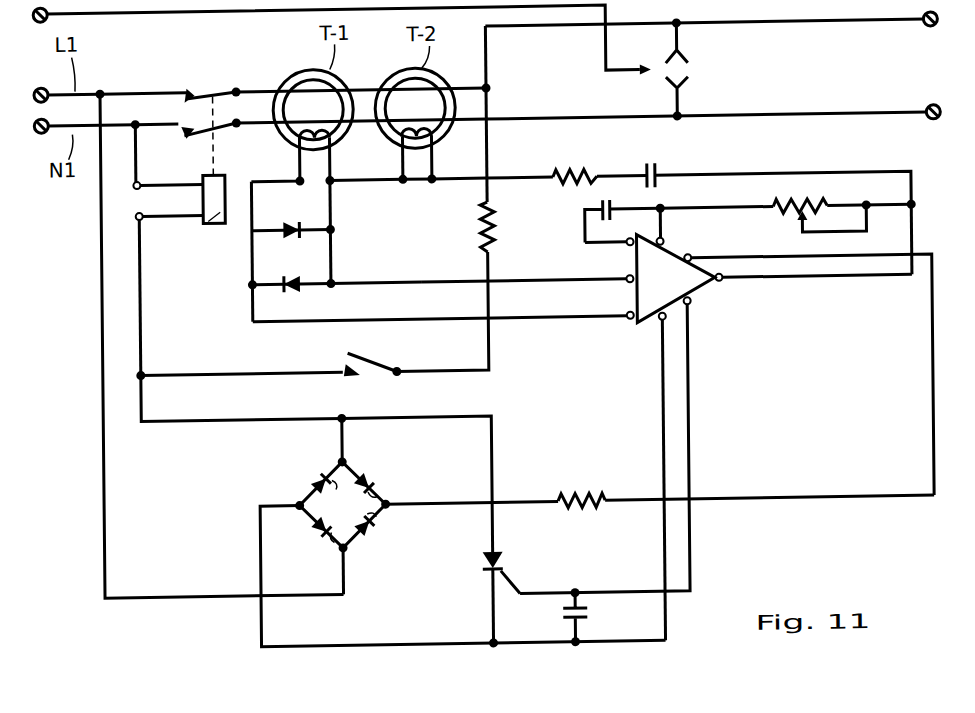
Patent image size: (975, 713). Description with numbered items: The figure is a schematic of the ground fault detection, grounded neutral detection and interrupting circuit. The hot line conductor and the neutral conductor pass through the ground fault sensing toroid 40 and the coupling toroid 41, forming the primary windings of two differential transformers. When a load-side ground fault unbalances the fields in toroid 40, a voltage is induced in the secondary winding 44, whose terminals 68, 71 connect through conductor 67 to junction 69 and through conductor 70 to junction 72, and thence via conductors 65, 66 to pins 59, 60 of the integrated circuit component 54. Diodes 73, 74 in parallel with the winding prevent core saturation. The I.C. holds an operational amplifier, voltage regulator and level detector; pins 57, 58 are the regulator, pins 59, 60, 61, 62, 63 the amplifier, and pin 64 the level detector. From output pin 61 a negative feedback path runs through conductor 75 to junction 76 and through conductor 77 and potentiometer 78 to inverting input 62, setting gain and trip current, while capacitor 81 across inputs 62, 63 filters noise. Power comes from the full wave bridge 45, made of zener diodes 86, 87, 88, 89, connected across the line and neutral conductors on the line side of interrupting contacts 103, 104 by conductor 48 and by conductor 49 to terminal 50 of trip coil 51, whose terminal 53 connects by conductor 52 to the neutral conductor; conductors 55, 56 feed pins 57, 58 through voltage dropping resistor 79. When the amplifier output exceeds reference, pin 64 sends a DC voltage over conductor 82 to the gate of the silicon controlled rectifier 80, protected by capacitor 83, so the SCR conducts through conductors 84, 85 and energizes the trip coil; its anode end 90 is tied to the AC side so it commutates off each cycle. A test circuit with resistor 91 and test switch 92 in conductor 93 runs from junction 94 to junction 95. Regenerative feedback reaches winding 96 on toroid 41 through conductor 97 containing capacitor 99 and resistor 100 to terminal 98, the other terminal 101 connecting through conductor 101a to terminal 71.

The ground fault sensing toroid 40 is at (298, 69).
The coupling toroid 41 is at (403, 67).
The secondary winding 44 is at (283, 125).
The full wave bridge 45 is at (297, 495).
The conductor 48 is at (100, 445).
The conductor 49 is at (265, 414).
The terminal of trip coil 50 is at (142, 215).
The trip coil 51 is at (213, 220).
The conductor 52 is at (137, 152).
The terminal of trip coil 53 is at (141, 183).
The integrated circuit component 54 is at (703, 283).
The conductor 55 is at (522, 501).
The conductor 56 is at (382, 640).
The pin 57 is at (692, 260).
The pin 58 is at (657, 326).
The pin 59 is at (626, 323).
The pin 60 is at (626, 284).
The output pin 61 is at (725, 286).
The inverting input 62 is at (665, 242).
The pin 63 is at (627, 247).
The pin 64 is at (690, 305).
The conductor 65 is at (523, 321).
The conductor 66 is at (515, 278).
The conductor 67 is at (253, 190).
The terminal of secondary winding 68 is at (296, 175).
The junction 69 is at (249, 282).
The conductor 70 is at (336, 215).
The terminal of secondary winding 71 is at (336, 177).
The junction 72 is at (338, 276).
The diode 73 is at (287, 232).
The diode 74 is at (301, 287).
The conductor 75 is at (847, 283).
The junction 76 is at (915, 209).
The conductor 77 is at (765, 206).
The potentiometer 78 is at (868, 223).
The voltage dropping resistor 79 is at (593, 495).
The silicon controlled rectifier 80 is at (503, 568).
The capacitor 81 is at (598, 212).
The conductor 82 is at (690, 446).
The capacitor 83 is at (560, 611).
The conductor 84 is at (490, 432).
The conductor 85 is at (487, 595).
The zener diode 86 is at (315, 527).
The zener diode 87 is at (365, 528).
The zener diode 88 is at (364, 473).
The zener diode 89 is at (315, 464).
The anode end of SCR 90 is at (490, 558).
The resistor 91 is at (497, 213).
The test switch 92 is at (347, 355).
The conductor 93 is at (492, 369).
The junction 94 is at (490, 87).
The junction 95 is at (142, 369).
The winding 96 is at (437, 122).
The conductor 97 is at (775, 177).
The terminal of winding 98 is at (435, 188).
The capacitor 99 is at (660, 173).
The resistor 100 is at (578, 170).
The terminal of winding 101 is at (410, 186).
The conductor 101a is at (373, 183).
The interrupting contact 103 is at (208, 86).
The interrupting contact 104 is at (197, 117).